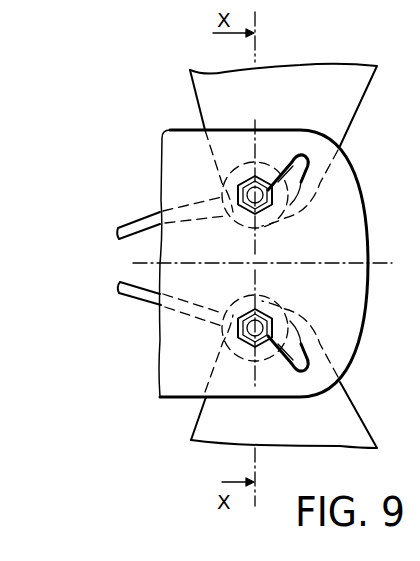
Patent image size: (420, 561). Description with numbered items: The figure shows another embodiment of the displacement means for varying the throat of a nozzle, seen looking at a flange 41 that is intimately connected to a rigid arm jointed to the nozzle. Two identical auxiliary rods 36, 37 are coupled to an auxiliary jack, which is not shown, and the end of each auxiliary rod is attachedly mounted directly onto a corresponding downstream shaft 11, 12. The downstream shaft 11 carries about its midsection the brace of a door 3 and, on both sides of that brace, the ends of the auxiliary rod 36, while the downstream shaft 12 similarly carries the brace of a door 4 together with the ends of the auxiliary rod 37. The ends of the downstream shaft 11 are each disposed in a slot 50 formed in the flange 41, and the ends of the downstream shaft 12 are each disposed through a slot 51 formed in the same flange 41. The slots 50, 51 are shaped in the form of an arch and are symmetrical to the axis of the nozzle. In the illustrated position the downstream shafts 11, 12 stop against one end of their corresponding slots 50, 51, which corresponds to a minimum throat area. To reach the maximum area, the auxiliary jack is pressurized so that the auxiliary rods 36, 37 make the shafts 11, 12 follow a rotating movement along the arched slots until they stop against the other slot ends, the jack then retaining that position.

The door 3 is at (345, 107).
The door 4 is at (352, 430).
The downstream shaft 11 is at (250, 188).
The downstream shaft 12 is at (245, 340).
The auxiliary rod 36 is at (150, 220).
The auxiliary rod 37 is at (146, 300).
The flange 41 is at (348, 303).
The slot 50 is at (296, 172).
The slot 51 is at (298, 362).